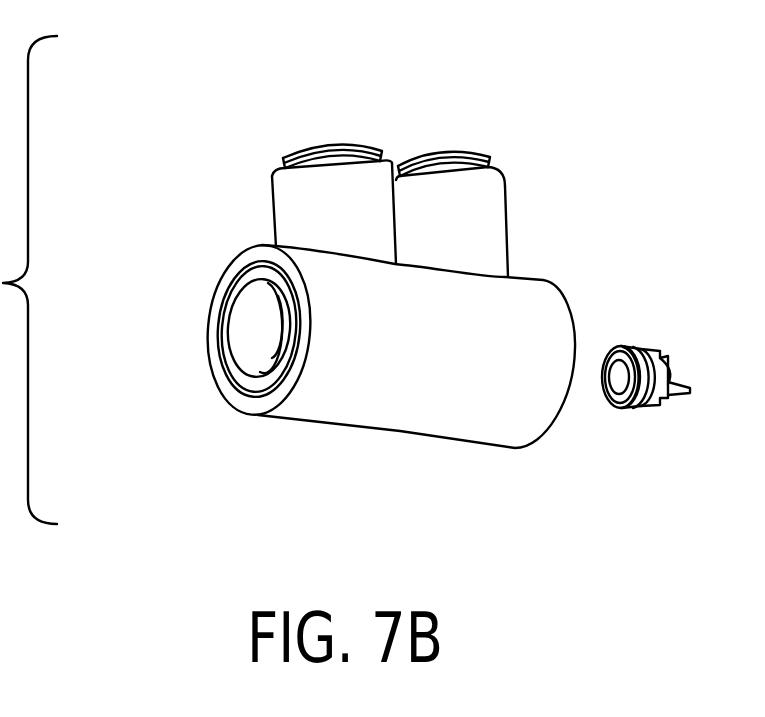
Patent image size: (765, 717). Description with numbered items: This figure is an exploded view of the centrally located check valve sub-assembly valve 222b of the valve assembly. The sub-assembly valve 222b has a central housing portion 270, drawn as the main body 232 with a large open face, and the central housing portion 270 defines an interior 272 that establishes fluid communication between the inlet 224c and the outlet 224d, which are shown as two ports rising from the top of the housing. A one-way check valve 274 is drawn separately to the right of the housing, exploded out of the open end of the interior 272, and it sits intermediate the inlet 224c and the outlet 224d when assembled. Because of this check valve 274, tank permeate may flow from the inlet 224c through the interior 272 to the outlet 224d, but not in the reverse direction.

The sub-assembly valve 222b is at (138, 158).
The inlet 224c is at (293, 148).
The outlet 224d is at (478, 160).
The manifold body 232 is at (415, 418).
The central housing portion 270 is at (487, 243).
The interior 272 is at (250, 327).
The one-way check valve 274 is at (642, 411).